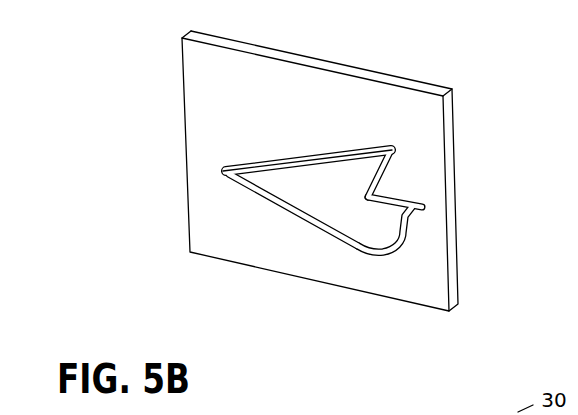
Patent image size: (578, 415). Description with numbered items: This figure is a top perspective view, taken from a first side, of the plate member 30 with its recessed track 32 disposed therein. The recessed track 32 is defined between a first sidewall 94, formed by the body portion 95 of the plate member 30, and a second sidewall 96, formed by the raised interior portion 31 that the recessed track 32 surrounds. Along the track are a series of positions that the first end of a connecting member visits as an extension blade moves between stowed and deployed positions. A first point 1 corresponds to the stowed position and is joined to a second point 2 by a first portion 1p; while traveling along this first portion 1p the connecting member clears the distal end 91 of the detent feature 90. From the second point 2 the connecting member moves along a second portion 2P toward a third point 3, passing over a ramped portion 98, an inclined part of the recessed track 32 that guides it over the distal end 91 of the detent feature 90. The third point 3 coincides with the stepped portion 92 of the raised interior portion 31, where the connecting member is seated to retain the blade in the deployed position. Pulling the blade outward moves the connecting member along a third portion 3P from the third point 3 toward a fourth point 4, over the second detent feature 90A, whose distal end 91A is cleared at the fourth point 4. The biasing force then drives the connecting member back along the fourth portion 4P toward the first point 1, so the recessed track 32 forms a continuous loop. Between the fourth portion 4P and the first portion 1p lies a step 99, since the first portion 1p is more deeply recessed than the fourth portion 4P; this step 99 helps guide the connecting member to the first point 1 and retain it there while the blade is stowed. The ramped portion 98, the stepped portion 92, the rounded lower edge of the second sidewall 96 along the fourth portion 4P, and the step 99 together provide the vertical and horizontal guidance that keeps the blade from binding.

The first point 1 is at (222, 166).
The first portion 1p is at (366, 174).
The second point 2 is at (390, 145).
The third point 3 is at (377, 222).
The fourth point 4 is at (428, 210).
The second portion 2P is at (390, 156).
The third portion 3P is at (395, 197).
The fourth portion 4P is at (285, 206).
The plate member 30 is at (395, 61).
The raised interior portion 31 is at (326, 192).
The recessed track 32 is at (273, 146).
The detent feature 90 is at (345, 163).
The distal end 91 is at (363, 160).
The stepped portion 92 is at (357, 198).
The first sidewall 94 is at (307, 206).
The body portion 95 is at (403, 100).
The second sidewall 96 is at (272, 172).
The ramped portion 98 is at (396, 163).
The step 99 is at (247, 178).
The second detent feature 90A is at (408, 248).
The distal end 91A is at (400, 235).